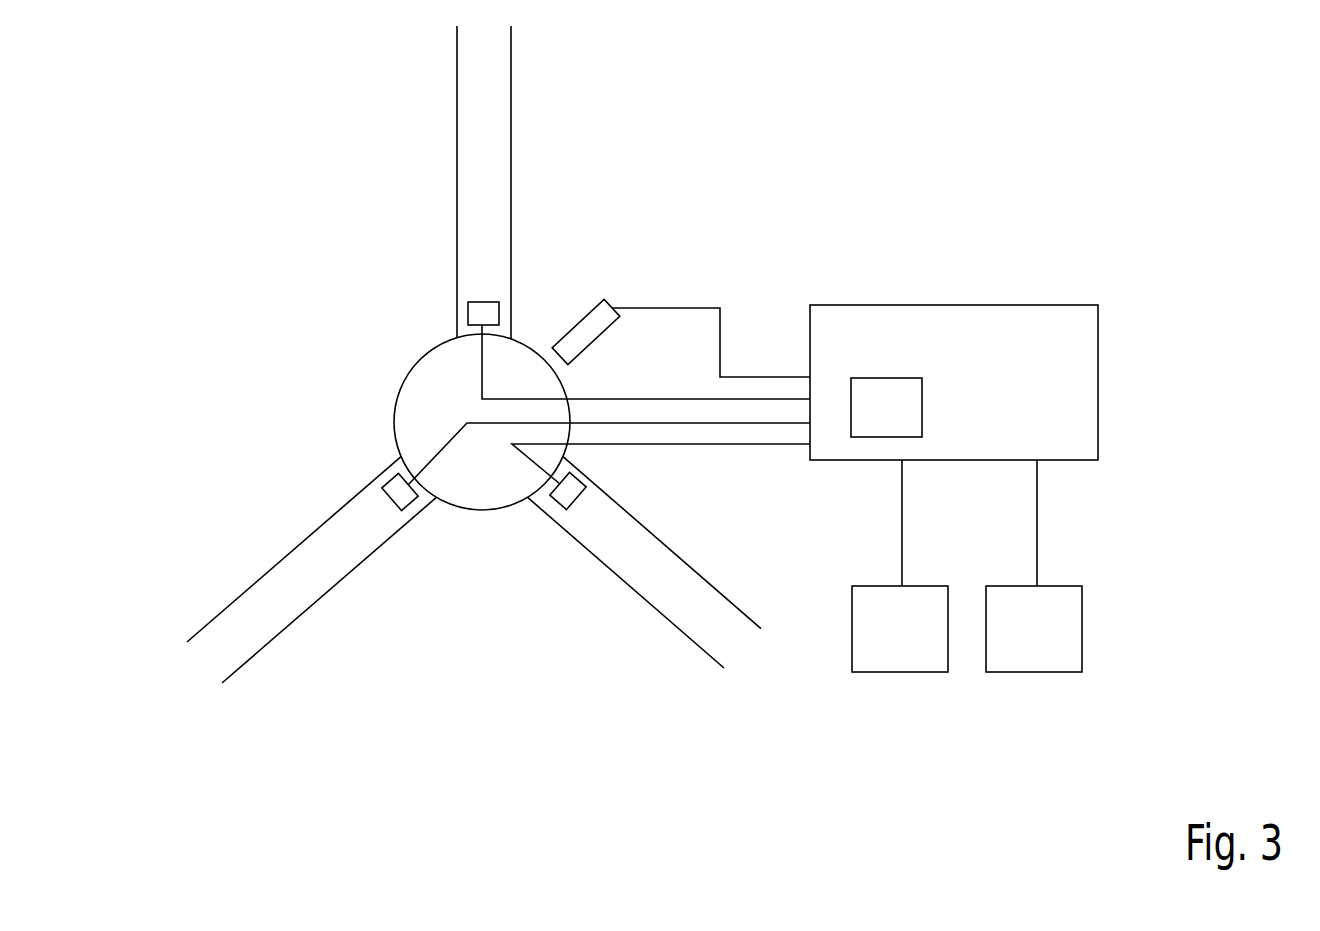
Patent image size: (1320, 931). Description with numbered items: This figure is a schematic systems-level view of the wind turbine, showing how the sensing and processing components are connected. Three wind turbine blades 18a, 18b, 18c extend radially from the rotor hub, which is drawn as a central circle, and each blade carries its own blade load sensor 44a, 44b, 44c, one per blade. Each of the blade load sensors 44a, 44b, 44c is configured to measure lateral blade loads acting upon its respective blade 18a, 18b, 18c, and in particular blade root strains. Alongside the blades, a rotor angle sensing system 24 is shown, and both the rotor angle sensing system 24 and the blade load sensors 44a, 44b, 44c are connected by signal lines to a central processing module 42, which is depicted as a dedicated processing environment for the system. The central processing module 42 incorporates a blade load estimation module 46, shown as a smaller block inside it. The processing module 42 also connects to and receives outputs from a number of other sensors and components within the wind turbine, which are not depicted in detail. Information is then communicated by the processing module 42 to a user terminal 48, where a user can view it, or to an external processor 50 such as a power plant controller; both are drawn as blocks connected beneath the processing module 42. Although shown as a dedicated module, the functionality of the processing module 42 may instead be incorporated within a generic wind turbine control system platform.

The wind turbine blade 18a is at (512, 117).
The wind turbine blade 18b is at (648, 530).
The wind turbine blade 18c is at (292, 550).
The rotor angle sensing system 24 is at (569, 300).
The central processing module 42 is at (878, 304).
The blade load sensor 44a is at (468, 312).
The blade load sensor 44b is at (588, 481).
The blade load sensor 44c is at (410, 511).
The blade load estimation module 46 is at (858, 438).
The user terminal 48 is at (1052, 585).
The external processor 50 is at (927, 585).